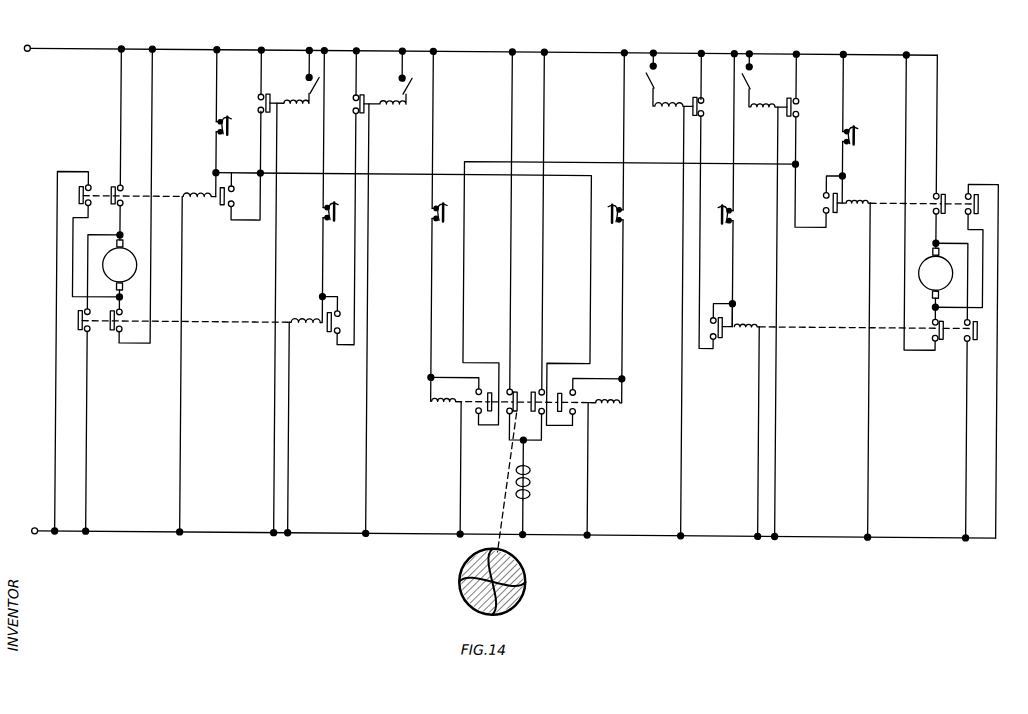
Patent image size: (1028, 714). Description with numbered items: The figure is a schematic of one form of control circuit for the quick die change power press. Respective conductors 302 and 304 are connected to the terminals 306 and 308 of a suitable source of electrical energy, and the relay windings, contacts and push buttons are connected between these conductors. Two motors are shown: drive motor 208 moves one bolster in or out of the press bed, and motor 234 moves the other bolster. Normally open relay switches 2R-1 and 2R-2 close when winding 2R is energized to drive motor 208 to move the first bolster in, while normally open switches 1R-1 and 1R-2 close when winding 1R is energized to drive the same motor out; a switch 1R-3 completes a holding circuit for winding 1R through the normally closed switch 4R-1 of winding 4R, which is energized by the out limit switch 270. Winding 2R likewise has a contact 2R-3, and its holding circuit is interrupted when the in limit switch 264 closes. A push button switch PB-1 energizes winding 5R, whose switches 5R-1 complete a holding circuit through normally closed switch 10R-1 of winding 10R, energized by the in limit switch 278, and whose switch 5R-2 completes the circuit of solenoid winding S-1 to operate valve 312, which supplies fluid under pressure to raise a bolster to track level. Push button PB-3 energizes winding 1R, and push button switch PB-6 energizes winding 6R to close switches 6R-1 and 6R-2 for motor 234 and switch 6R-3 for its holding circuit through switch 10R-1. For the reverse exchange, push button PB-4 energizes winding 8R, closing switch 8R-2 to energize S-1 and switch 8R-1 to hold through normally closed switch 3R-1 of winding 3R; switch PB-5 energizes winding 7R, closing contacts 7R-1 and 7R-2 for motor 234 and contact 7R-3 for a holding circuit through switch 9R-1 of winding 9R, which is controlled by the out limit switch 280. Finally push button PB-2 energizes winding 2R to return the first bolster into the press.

The terminal 308 is at (29, 49).
The conductor 304 is at (170, 52).
The terminal 306 is at (38, 537).
The conductor 302 is at (228, 536).
The drive motor 208 is at (102, 268).
The motor 234 is at (918, 270).
The in limit switch 264 is at (309, 87).
The out limit switch 270 is at (409, 86).
The in limit switch 278 is at (746, 81).
The out limit switch 280 is at (649, 79).
The valve 312 is at (519, 571).
The winding 1R is at (300, 320).
The normally open switch 1R-1 is at (78, 330).
The normally open switch 1R-2 is at (111, 336).
The switch 1R-3 is at (328, 338).
The winding 2R is at (183, 195).
The normally open relay switch 2R-1 is at (78, 192).
The normally open relay switch 2R-2 is at (112, 189).
The switch 2R-3 is at (219, 206).
The winding 3R is at (288, 109).
The normally closed switch 3R-1 is at (264, 95).
The winding 4R is at (394, 109).
The normally closed switch 4R-1 is at (360, 95).
The winding 5R is at (444, 407).
The switch 5R-1 is at (492, 414).
The switch 5R-2 is at (536, 390).
The winding 6R is at (858, 196).
The switch 6R-1 is at (943, 190).
The switch 6R-2 is at (977, 190).
The switch 6R-3 is at (846, 215).
The winding 7R is at (758, 322).
The contact 7R-1 is at (942, 338).
The contact 7R-2 is at (978, 338).
The contact 7R-3 is at (724, 334).
The winding 8R is at (610, 407).
The switch 8R-1 is at (563, 414).
The switch 8R-2 is at (533, 413).
The winding 9R is at (674, 110).
The switch 9R-1 is at (697, 95).
The winding 10R is at (766, 110).
The normally closed switch 10R-1 is at (791, 96).
The push button switch PB-1 is at (446, 214).
The push button PB-2 is at (227, 120).
The push button PB-3 is at (336, 214).
The push button PB-4 is at (635, 228).
The switch PB-5 is at (743, 190).
The push button switch PB-6 is at (846, 129).
The solenoid winding S-1 is at (531, 484).